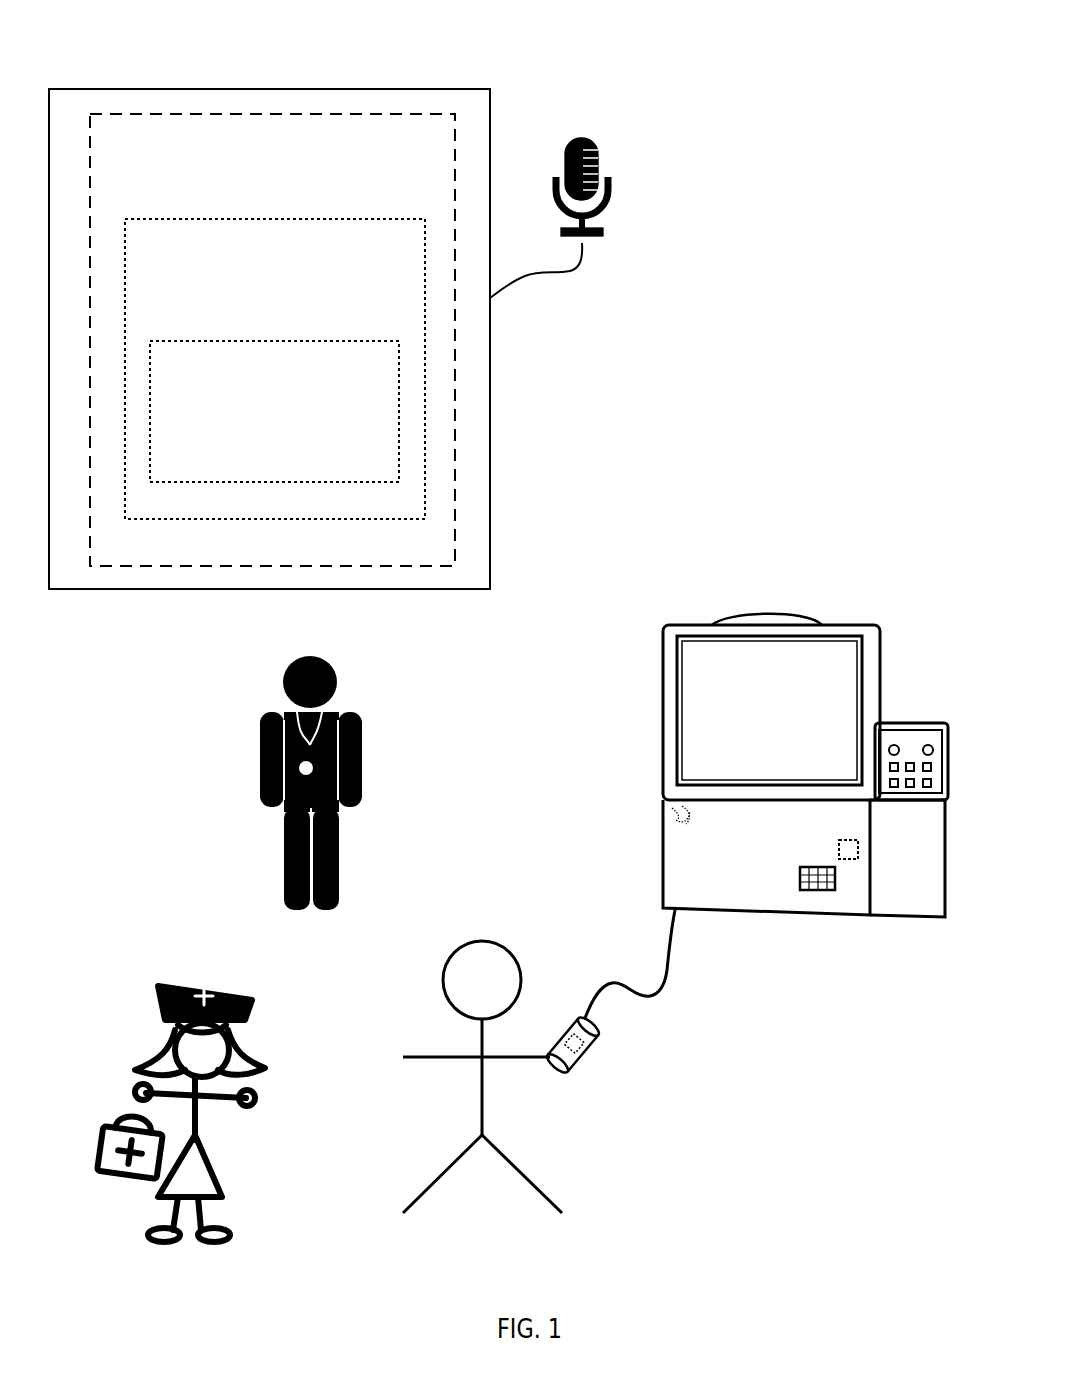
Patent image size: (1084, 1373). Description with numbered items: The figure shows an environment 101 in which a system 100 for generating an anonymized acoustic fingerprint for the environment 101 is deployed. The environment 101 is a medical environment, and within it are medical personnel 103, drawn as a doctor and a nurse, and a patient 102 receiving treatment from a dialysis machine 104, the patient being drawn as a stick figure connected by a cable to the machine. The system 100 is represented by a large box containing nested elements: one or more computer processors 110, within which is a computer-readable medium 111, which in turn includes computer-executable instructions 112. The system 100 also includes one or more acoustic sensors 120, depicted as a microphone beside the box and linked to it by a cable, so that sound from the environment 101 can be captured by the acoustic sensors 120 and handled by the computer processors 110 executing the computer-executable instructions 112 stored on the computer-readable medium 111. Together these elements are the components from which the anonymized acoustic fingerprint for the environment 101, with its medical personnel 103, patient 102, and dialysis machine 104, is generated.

The system 100 is at (500, 74).
The environment 101 is at (894, 114).
The patient 102 is at (628, 1088).
The medical personnel 103 is at (222, 945).
The dialysis machine 104 is at (840, 585).
The computer processors 110 is at (253, 189).
The computer-readable medium 111 is at (254, 329).
The computer-executable instructions 112 is at (254, 449).
The acoustic sensors 120 is at (584, 110).